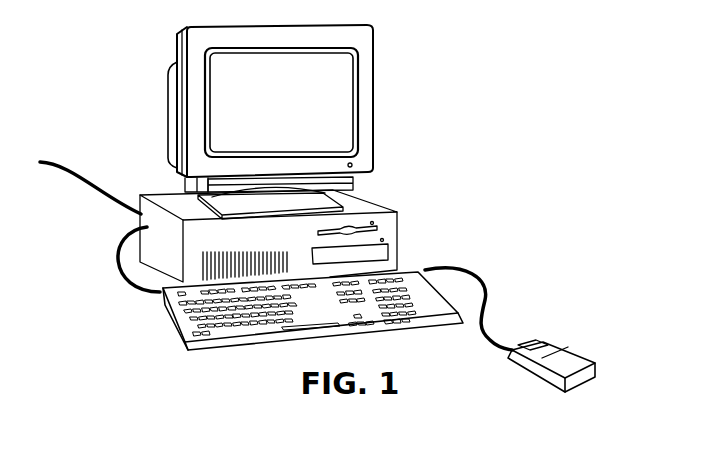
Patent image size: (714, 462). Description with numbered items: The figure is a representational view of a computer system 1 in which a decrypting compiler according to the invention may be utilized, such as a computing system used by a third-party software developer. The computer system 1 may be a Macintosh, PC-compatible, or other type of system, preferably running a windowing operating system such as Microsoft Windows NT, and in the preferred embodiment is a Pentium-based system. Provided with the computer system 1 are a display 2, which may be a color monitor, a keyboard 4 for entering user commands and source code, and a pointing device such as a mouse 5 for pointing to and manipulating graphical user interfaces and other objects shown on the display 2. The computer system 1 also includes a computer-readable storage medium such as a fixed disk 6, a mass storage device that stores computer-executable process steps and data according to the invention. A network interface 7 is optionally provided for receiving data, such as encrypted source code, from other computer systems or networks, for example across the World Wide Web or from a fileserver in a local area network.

The computer system 1 is at (455, 81).
The display 2 is at (332, 110).
The keyboard 4 is at (160, 326).
The mouse 5 is at (580, 358).
The fixed disk 6 is at (360, 255).
The network interface 7 is at (87, 191).